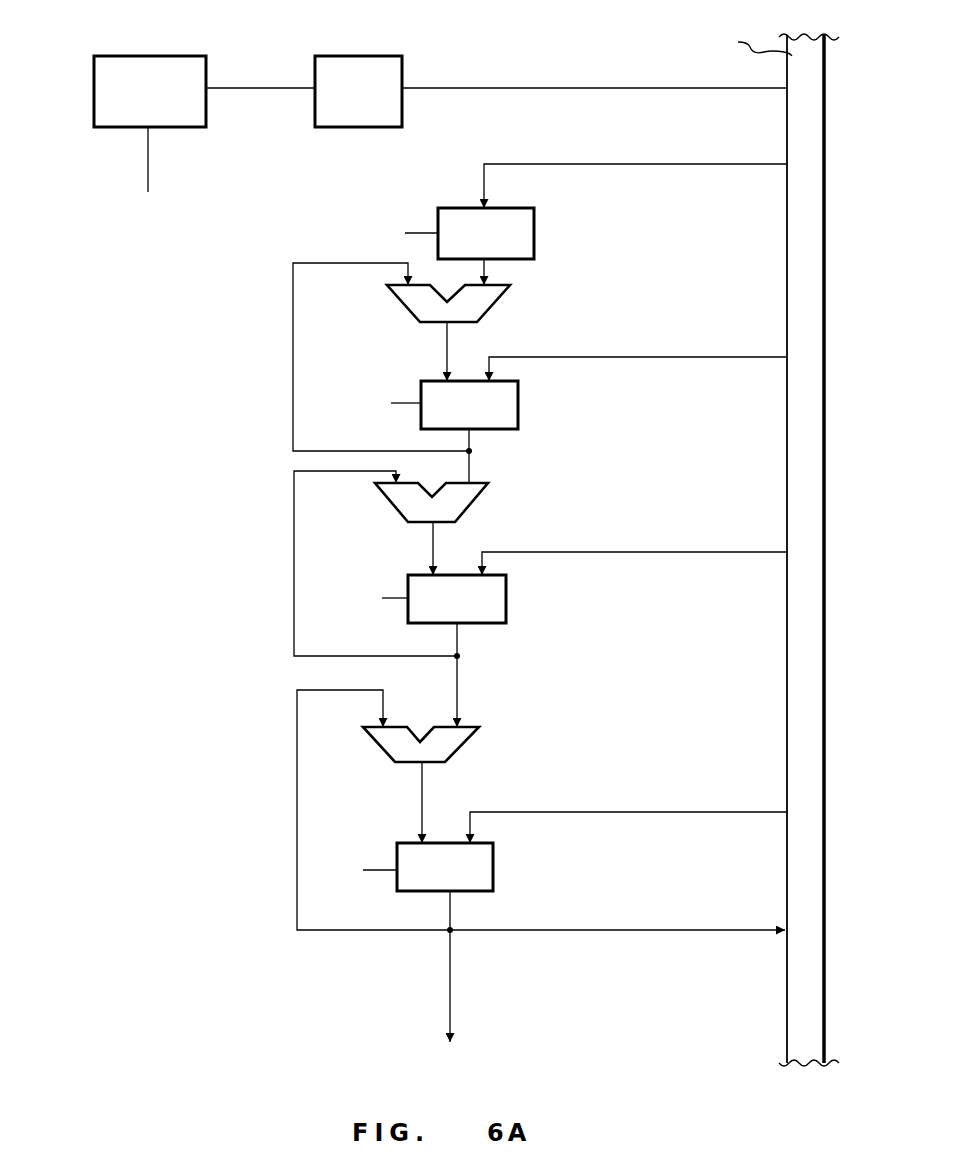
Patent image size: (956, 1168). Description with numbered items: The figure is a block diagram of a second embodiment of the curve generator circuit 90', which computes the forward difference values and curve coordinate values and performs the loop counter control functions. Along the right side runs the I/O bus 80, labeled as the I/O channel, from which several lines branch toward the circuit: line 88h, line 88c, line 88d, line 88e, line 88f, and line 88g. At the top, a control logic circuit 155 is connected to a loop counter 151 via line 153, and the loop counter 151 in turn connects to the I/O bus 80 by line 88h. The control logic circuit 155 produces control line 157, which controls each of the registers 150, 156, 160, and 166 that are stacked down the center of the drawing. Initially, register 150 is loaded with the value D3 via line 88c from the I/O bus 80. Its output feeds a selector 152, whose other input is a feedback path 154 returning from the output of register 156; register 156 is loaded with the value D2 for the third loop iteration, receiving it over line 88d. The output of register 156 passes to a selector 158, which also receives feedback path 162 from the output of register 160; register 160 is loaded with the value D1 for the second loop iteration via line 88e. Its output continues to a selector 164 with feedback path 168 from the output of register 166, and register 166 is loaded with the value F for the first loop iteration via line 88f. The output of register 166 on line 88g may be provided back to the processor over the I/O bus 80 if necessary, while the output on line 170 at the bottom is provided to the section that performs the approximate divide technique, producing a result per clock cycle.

The I/O bus 80 is at (814, 127).
The control logic circuit 155 is at (126, 56).
The line 153 is at (252, 88).
The loop counter 151 is at (347, 56).
The channel line 88h is at (546, 88).
The control line 157 is at (146, 181).
The line 88c is at (707, 163).
The register 150 is at (503, 240).
The multiplexer 152 is at (505, 292).
The feedback line 154 is at (290, 350).
The channel line 88d is at (709, 358).
The register 156 is at (487, 414).
The multiplexer 158 is at (483, 493).
The feedback line 162 is at (289, 559).
The line 88e is at (711, 552).
The register 160 is at (474, 608).
The multiplexer 164 is at (476, 736).
The feedback line 168 is at (293, 786).
The line 88f is at (714, 816).
The register 166 is at (462, 875).
The line 88g is at (704, 934).
The line 170 is at (455, 992).
The curve generator circuit 90' is at (164, 639).